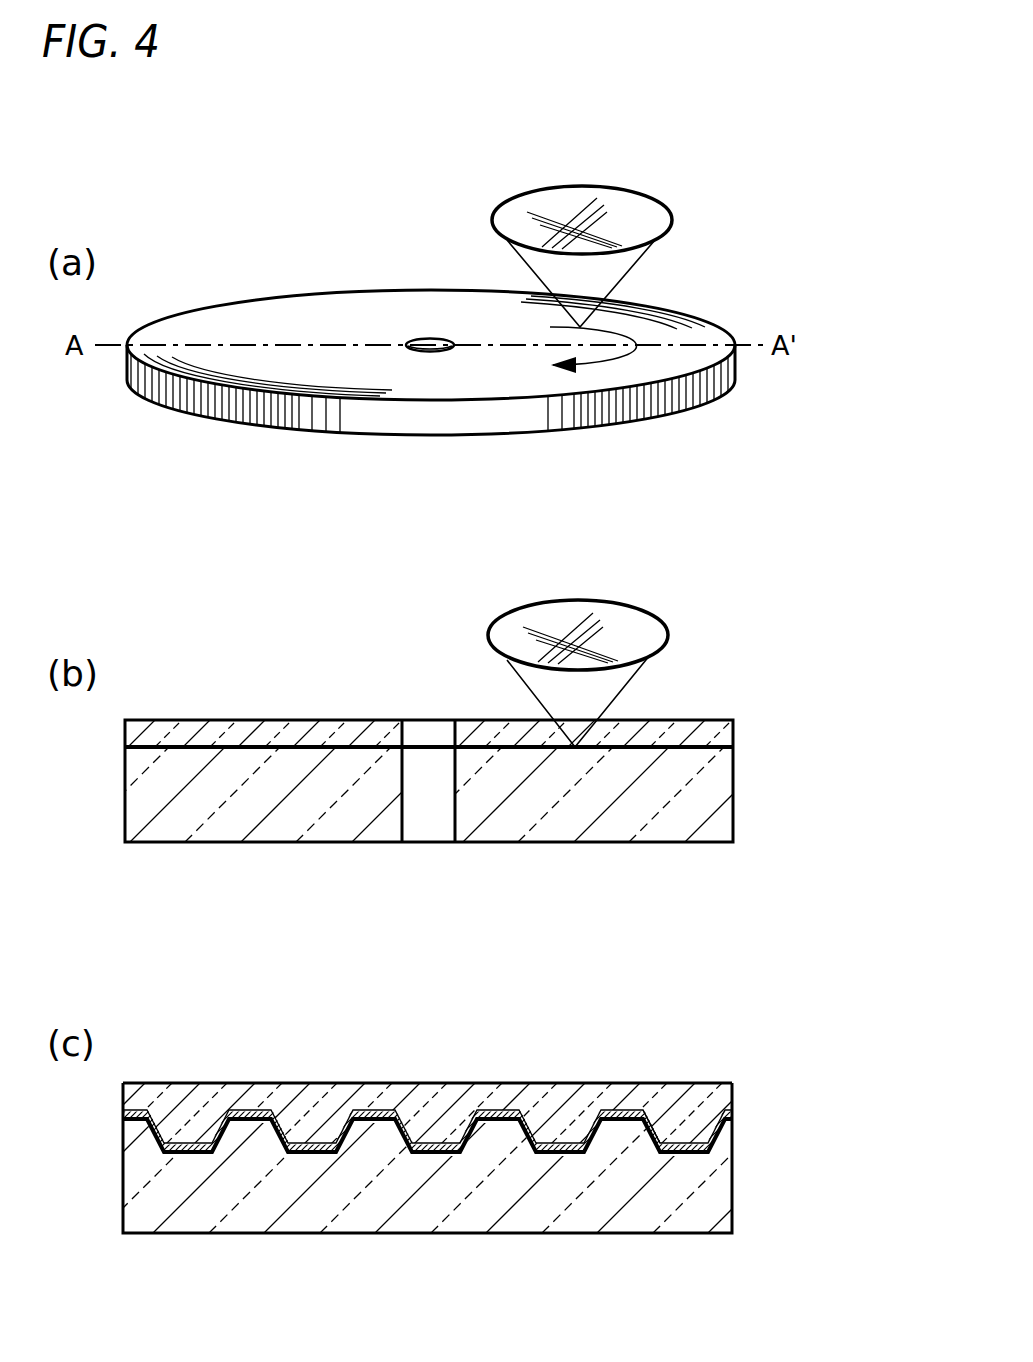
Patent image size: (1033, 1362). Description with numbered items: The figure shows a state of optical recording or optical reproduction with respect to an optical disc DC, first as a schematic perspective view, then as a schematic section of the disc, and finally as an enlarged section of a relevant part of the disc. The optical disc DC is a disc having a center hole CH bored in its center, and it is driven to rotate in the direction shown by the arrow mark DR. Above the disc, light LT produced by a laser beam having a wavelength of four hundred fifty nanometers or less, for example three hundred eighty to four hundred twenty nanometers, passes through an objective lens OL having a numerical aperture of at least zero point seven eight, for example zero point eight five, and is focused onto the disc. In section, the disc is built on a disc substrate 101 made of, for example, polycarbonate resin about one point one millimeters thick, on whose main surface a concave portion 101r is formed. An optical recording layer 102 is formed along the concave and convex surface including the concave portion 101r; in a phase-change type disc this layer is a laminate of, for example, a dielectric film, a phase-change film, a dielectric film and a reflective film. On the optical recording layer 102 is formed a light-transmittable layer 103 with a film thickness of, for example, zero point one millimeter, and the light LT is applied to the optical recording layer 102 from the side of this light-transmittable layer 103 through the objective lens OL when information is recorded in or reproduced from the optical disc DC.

The optical disc DC is at (235, 318).
The center hole CH is at (420, 336).
The objective lens OL is at (623, 207).
The light LT is at (630, 270).
The arrow mark DR is at (593, 367).
The disc substrate 101 is at (733, 817).
The concave portion 101r is at (677, 1127).
The optical recording layer 102 is at (733, 752).
The light-transmittable layer 103 is at (713, 720).